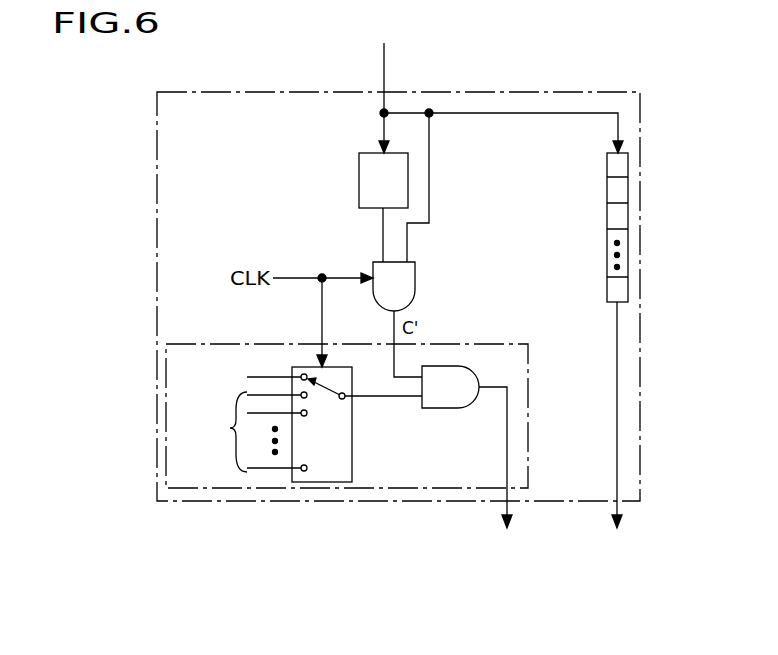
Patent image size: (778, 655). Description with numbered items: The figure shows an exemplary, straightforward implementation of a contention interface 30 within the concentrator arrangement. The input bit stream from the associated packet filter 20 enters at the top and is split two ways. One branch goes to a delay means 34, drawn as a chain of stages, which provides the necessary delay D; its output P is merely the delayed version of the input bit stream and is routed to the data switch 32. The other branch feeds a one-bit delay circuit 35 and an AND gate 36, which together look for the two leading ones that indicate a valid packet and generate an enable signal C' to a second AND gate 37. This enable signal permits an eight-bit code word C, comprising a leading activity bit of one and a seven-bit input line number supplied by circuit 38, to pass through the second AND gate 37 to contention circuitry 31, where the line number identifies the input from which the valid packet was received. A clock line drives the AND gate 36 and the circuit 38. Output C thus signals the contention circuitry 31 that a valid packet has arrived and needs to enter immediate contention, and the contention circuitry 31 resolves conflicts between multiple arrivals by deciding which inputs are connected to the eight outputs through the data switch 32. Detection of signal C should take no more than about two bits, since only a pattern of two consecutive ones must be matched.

The packet filter 20 is at (361, 82).
The contention interface 30 is at (352, 92).
The contention circuitry 31 is at (442, 495).
The data switch 32 is at (654, 453).
The delay means 34 is at (607, 203).
The 1-bit delay circuit 35 is at (359, 190).
The AND gate 36 is at (416, 274).
The second AND gate 37 is at (461, 409).
The circuit 38 is at (352, 440).